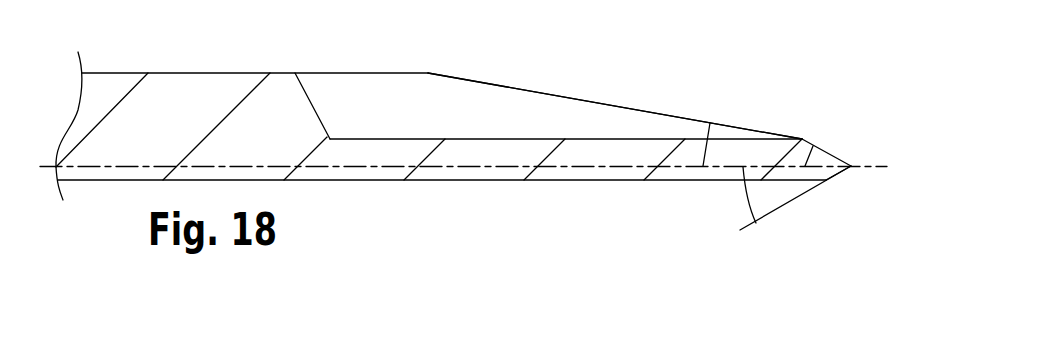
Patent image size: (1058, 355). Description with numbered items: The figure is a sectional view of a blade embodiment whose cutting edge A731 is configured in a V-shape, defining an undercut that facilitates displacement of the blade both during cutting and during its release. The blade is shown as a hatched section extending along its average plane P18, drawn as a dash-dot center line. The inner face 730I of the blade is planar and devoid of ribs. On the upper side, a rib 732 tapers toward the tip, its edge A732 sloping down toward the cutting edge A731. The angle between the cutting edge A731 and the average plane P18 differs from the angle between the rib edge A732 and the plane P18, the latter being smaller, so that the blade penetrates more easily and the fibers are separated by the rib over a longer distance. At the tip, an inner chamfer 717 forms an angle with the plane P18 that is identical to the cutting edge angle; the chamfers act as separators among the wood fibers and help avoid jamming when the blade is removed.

The rib 732 is at (462, 105).
The edge of the rib A732 is at (603, 103).
The cutting edge A731 is at (855, 160).
The inner chamfer 717 is at (842, 172).
The inner face of the blade 730I is at (592, 181).
The average plane of the blade P18 is at (498, 167).